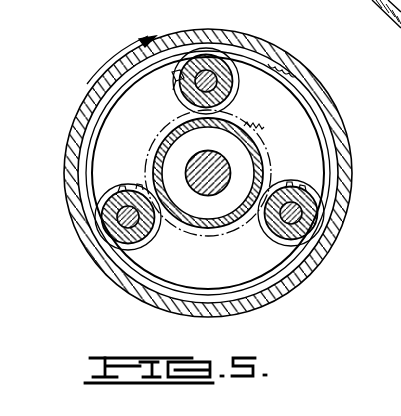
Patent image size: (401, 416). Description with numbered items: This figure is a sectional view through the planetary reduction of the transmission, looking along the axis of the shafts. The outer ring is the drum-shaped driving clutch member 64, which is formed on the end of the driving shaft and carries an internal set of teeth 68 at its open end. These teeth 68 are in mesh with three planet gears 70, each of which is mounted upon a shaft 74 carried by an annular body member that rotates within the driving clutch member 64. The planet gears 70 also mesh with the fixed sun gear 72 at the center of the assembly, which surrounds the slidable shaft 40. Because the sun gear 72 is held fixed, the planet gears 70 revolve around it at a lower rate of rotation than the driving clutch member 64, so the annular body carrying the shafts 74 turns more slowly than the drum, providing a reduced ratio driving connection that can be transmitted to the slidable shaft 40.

The slidable shaft 40 is at (227, 157).
The drum-shaped driving clutch member 64 is at (343, 135).
The internal set of teeth 68 is at (302, 86).
The planet gears 70 is at (298, 200).
The sun gear 72 is at (258, 147).
The shafts 74 is at (185, 89).